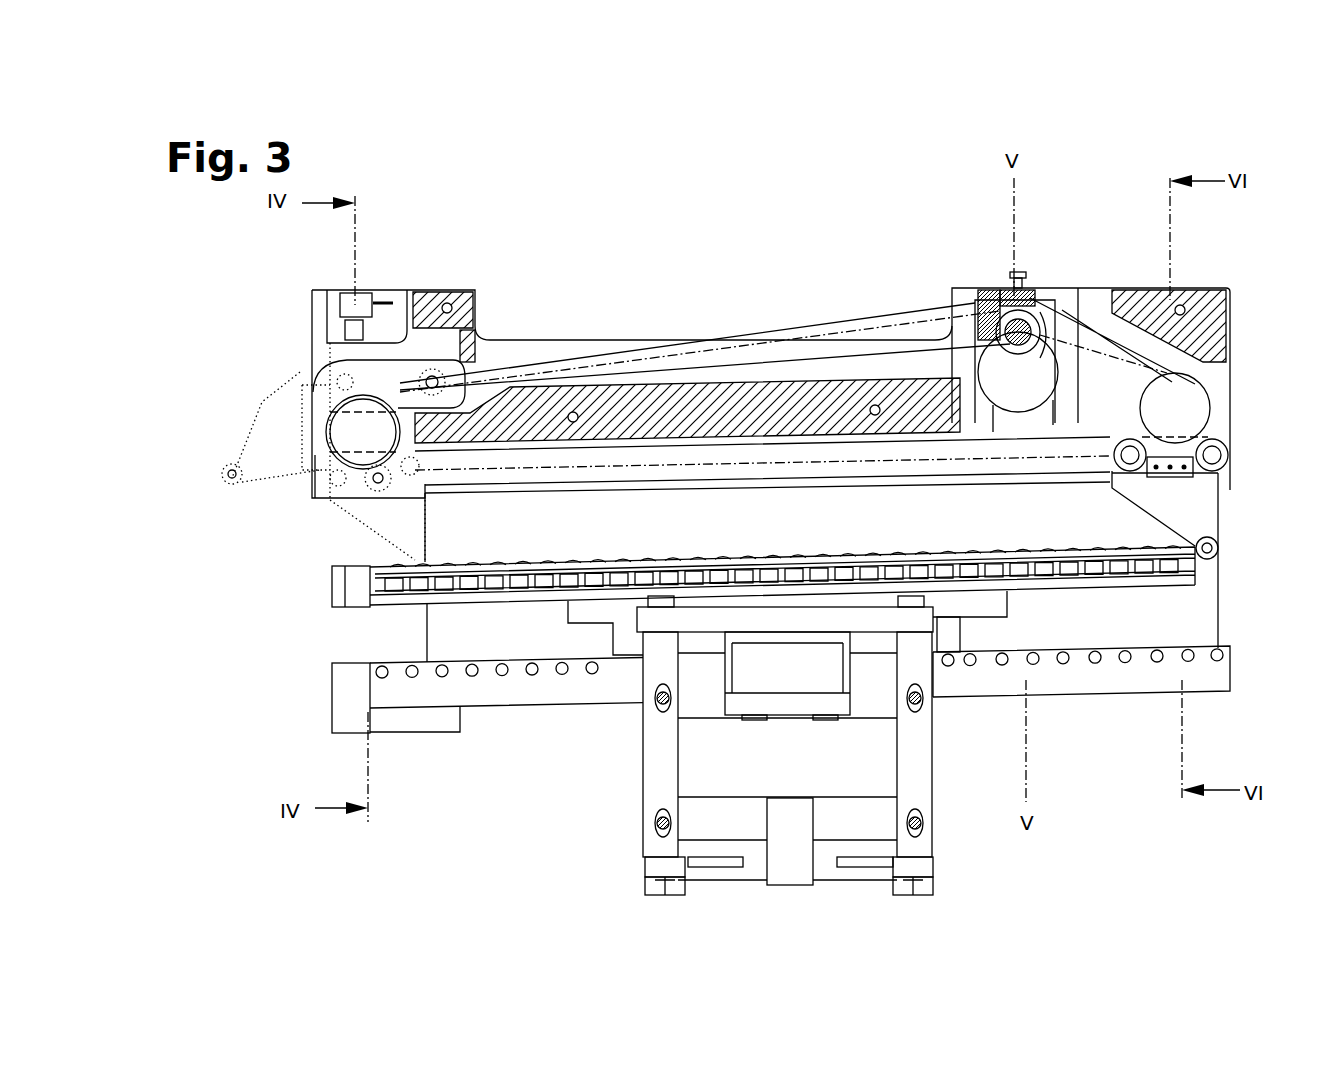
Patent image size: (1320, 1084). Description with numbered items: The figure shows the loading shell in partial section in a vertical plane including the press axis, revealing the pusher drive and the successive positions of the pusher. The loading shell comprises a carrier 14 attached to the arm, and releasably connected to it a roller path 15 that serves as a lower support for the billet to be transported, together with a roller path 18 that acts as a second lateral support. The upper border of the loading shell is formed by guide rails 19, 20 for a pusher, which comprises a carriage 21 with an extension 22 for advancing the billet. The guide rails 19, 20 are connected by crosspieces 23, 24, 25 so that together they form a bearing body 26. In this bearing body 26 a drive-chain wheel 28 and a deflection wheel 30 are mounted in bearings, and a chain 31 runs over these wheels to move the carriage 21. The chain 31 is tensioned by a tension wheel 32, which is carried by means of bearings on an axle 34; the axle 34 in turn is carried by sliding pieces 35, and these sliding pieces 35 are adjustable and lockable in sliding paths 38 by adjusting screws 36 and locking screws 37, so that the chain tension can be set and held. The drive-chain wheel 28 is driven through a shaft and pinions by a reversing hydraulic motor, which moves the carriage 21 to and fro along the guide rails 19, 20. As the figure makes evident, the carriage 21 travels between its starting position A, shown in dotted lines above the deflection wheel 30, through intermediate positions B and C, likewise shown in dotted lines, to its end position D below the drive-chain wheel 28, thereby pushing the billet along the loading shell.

The carrier 14 is at (660, 780).
The roller path 15 is at (510, 692).
The roller path 18 is at (460, 590).
The guide rail 19 is at (697, 468).
The guide rail 20 is at (767, 487).
The carriage 21 is at (1222, 477).
The extension 22 is at (1195, 520).
The crosspiece 23 is at (622, 415).
The crosspiece 24 is at (447, 292).
The crosspiece 25 is at (1195, 305).
The bearing body 26 is at (878, 286).
The drive-chain wheel 28 is at (1190, 408).
The deflection wheel 30 is at (362, 432).
The chain 31 is at (830, 462).
The tension wheel 32 is at (1042, 318).
The axle 34 is at (1018, 372).
The sliding piece 35 is at (1012, 302).
The adjusting screw 36 is at (985, 298).
The locking screw 37 is at (1020, 278).
The sliding path 38 is at (1053, 400).
The starting position A is at (382, 322).
The intermediate position B is at (262, 428).
The intermediate position C is at (373, 524).
The end position D is at (1182, 500).